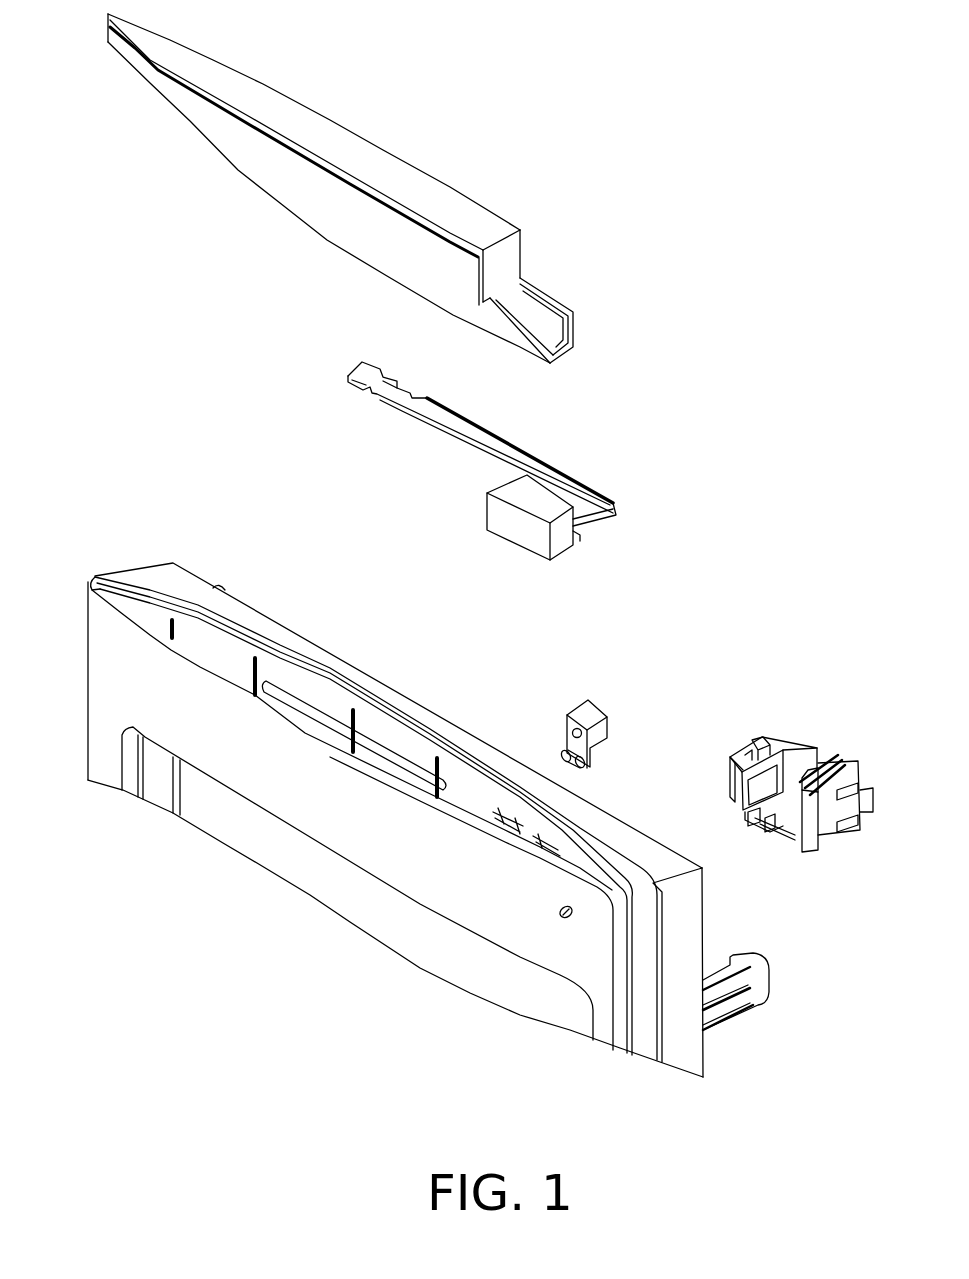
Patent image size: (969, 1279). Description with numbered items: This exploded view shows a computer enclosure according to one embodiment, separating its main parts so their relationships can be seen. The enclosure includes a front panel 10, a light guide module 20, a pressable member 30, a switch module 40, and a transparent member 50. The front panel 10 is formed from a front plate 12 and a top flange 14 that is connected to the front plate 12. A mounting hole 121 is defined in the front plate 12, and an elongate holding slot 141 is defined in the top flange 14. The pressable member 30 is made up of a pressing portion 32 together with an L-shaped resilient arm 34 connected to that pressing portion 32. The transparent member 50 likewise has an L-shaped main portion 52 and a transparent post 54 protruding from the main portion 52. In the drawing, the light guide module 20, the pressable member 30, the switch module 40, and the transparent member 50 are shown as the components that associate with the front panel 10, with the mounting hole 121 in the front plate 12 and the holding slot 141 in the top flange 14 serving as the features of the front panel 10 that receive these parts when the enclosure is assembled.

The front panel 10 is at (243, 583).
The front plate 12 is at (112, 650).
The top flange 14 is at (162, 578).
The holding slot 141 is at (228, 657).
The mounting hole 121 is at (562, 917).
The light guide module 20 is at (468, 178).
The pressable member 30 is at (596, 461).
The pressing portion 32 is at (510, 492).
The resilient arm 34 is at (460, 423).
The switch module 40 is at (821, 731).
The transparent member 50 is at (572, 703).
The main portion 52 is at (597, 732).
The transparent post 54 is at (566, 750).